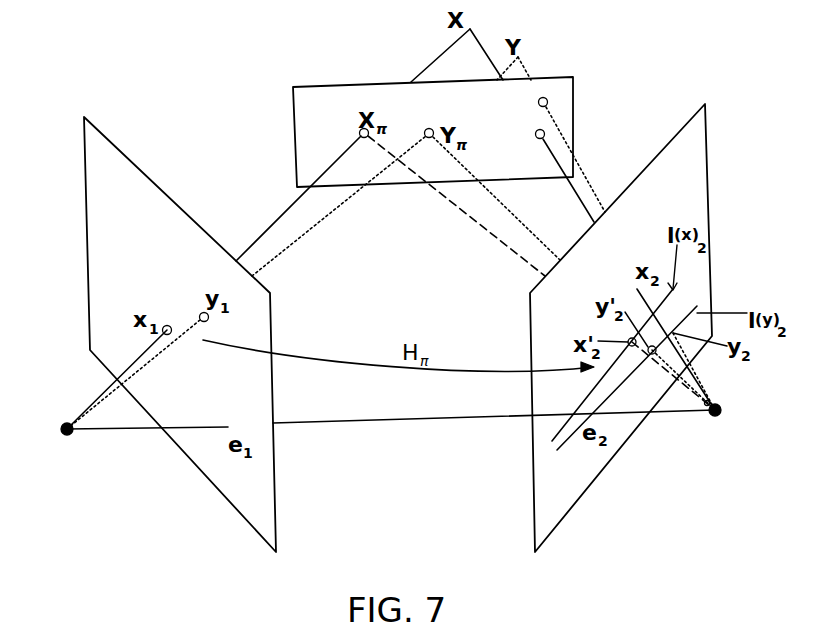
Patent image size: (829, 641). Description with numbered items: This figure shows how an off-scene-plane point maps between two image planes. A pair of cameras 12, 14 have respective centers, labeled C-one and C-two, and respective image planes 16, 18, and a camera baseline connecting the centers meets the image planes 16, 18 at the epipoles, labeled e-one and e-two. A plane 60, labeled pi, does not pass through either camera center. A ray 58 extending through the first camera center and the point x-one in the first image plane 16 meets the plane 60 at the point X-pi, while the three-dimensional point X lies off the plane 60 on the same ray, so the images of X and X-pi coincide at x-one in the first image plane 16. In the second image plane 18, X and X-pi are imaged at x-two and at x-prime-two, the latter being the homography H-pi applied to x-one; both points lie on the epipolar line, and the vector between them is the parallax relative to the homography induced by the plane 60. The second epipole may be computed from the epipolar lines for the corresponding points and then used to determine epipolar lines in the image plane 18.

The camera 12 is at (66, 423).
The camera 14 is at (715, 410).
The image plane 16 is at (138, 165).
The image plane 18 is at (710, 135).
The ray 58 is at (280, 217).
The plane 60 is at (352, 85).